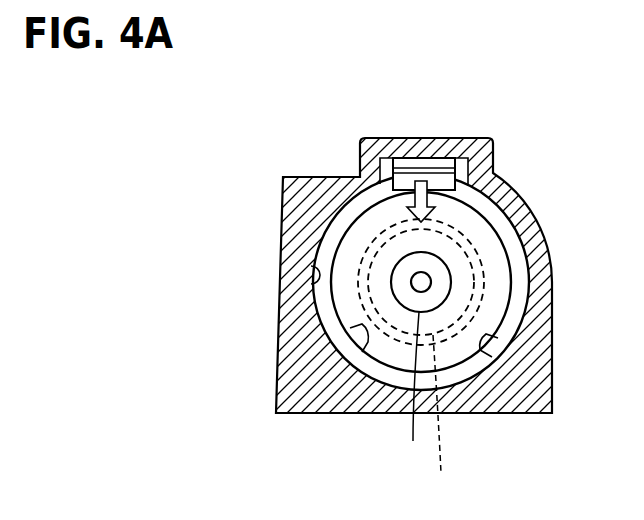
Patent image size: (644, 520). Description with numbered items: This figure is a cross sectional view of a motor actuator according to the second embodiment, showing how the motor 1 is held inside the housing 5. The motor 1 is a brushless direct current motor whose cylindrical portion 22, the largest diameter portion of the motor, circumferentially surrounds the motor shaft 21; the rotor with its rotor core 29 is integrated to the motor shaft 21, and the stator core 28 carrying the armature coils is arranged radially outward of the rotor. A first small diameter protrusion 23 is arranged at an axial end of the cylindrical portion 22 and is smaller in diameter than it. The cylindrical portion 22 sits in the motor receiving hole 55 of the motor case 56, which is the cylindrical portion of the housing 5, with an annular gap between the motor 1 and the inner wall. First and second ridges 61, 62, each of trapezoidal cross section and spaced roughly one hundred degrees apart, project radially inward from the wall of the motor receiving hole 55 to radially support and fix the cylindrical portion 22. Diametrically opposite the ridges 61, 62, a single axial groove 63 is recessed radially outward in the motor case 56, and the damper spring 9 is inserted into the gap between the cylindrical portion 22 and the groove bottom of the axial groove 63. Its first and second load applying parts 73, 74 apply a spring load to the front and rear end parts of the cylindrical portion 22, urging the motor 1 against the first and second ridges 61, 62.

The motor 1 is at (465, 282).
The cylindrical portion 22 is at (505, 207).
The housing 5 is at (505, 173).
The damper spring 9 is at (425, 158).
The motor shaft 21 is at (430, 282).
The first small diameter protrusion 23 is at (413, 392).
The stator core 28 is at (441, 420).
The rotor core 29 is at (485, 301).
The motor receiving hole 55 is at (308, 279).
The motor case 56 is at (538, 232).
The first ridge 61 is at (360, 352).
The second ridge 62 is at (480, 356).
The axial groove 63 is at (375, 168).
The first load applying part 73 is at (305, 201).
The second load applying part 74 is at (414, 190).